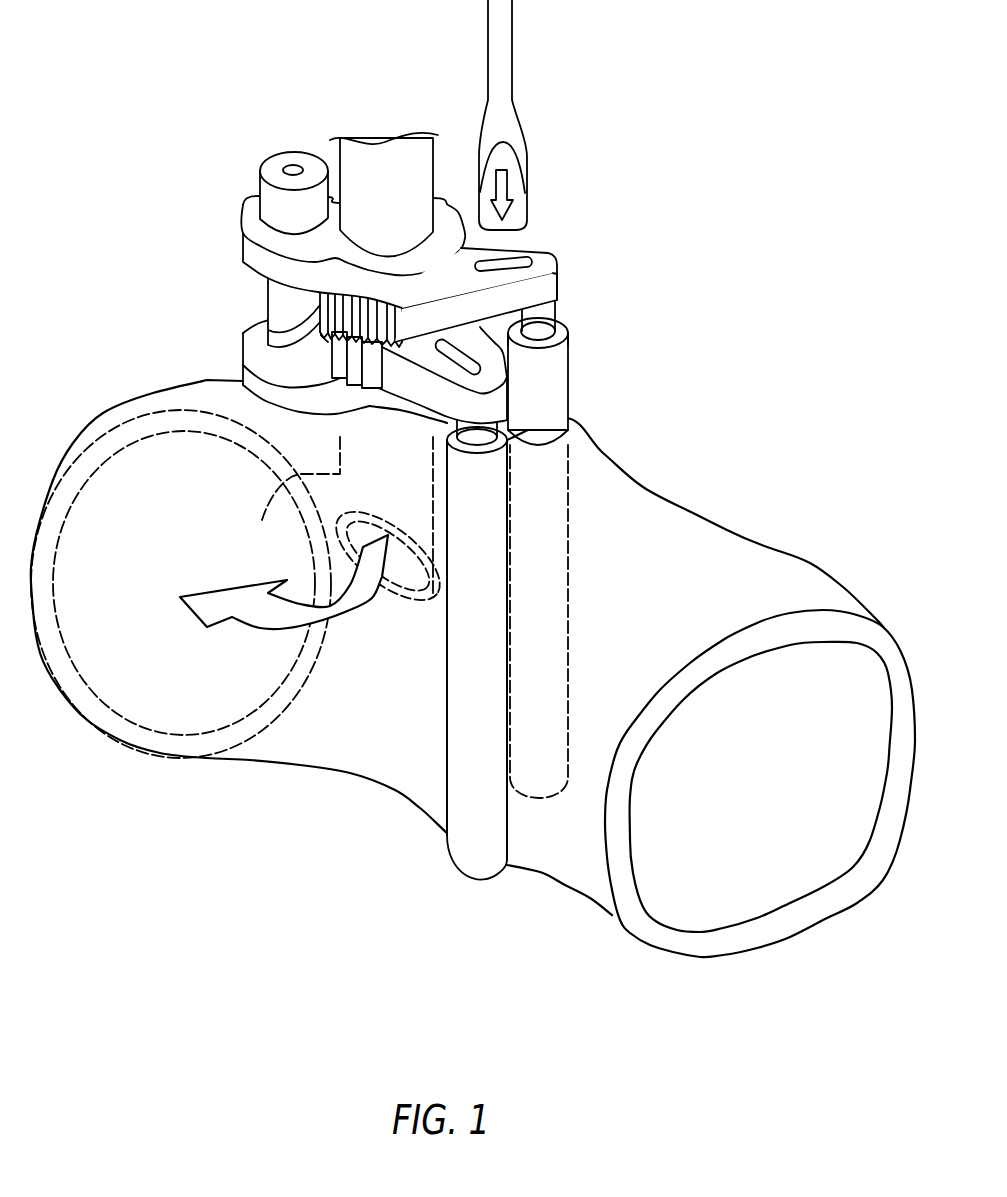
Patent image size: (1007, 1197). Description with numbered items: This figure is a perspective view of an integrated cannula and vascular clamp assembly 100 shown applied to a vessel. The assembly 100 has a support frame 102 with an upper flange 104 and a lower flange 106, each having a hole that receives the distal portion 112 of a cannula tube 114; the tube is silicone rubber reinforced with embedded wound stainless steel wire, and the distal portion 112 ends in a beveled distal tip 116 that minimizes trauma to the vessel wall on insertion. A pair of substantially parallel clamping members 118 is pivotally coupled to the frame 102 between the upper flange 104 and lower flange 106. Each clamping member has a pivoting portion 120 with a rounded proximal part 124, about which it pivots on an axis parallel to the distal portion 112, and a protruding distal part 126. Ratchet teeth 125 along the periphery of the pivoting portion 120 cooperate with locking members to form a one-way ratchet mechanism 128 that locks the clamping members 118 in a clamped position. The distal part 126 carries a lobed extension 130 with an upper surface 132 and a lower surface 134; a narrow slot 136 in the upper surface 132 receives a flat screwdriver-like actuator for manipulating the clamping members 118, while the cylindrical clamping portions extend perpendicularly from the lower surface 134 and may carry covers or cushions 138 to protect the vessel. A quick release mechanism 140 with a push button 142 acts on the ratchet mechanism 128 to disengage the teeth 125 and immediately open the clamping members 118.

The integrated cannula and vascular clamp assembly 100 is at (404, 440).
The support frame 102 is at (245, 237).
The upper flange 104 is at (245, 245).
The lower flange 106 is at (376, 326).
The distal portion 112 is at (568, 385).
The cannula tube 114 is at (425, 157).
The distal tip 116 is at (393, 593).
The clamping members 118 is at (563, 322).
The pivoting portion 120 is at (402, 377).
The rounded proximal part 124 is at (318, 312).
The ratchet teeth 125 is at (322, 336).
The protruding distal part 126 is at (557, 255).
The one-way ratchet mechanism 128 is at (318, 292).
The lobed extension 130 is at (557, 283).
The upper surface 132 is at (492, 273).
The lower surface 134 is at (546, 349).
The narrow slot 136 is at (517, 258).
The covers or cushions 138 is at (510, 525).
The quick release mechanism 140 is at (262, 168).
The push button 142 is at (259, 188).